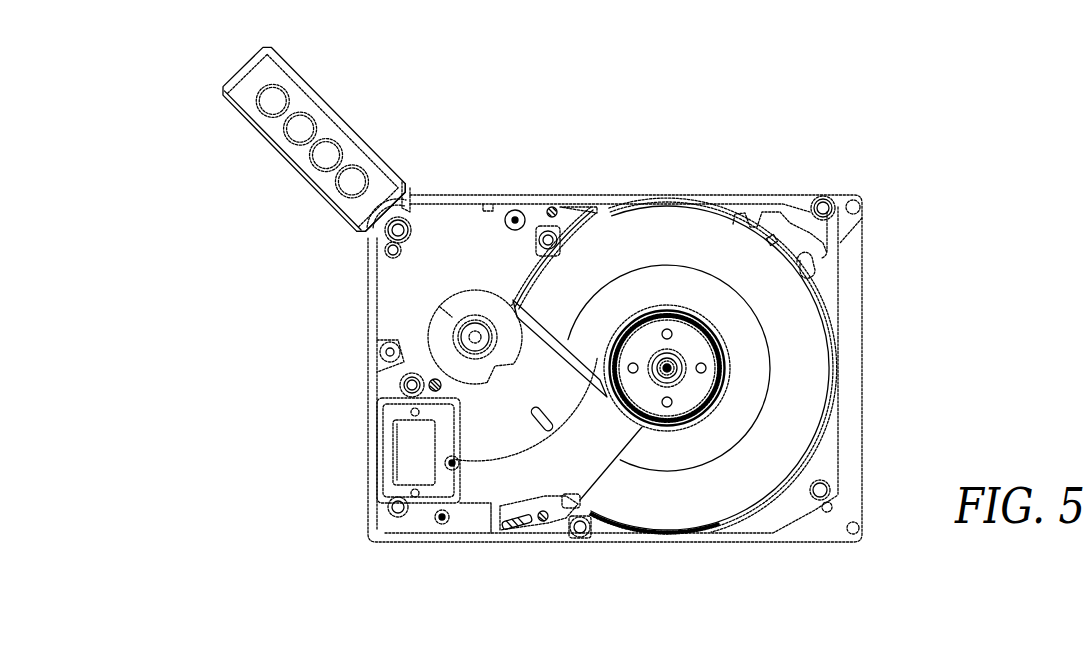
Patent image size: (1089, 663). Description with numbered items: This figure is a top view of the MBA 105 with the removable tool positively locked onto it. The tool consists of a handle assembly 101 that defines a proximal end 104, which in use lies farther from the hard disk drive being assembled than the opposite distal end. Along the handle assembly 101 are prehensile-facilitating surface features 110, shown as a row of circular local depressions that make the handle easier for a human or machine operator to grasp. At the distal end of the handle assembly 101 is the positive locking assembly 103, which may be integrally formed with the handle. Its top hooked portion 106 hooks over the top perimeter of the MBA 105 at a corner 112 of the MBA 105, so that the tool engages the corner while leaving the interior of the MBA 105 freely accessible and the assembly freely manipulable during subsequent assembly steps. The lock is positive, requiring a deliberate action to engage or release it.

The handle assembly 101 is at (281, 163).
The positive locking assembly 103 is at (409, 212).
The proximal end 104 is at (242, 54).
The MBA 105 is at (772, 190).
The top hooked portion 106 is at (405, 203).
The prehensile-facilitating surface features 110 is at (325, 158).
The corner 112 is at (358, 245).